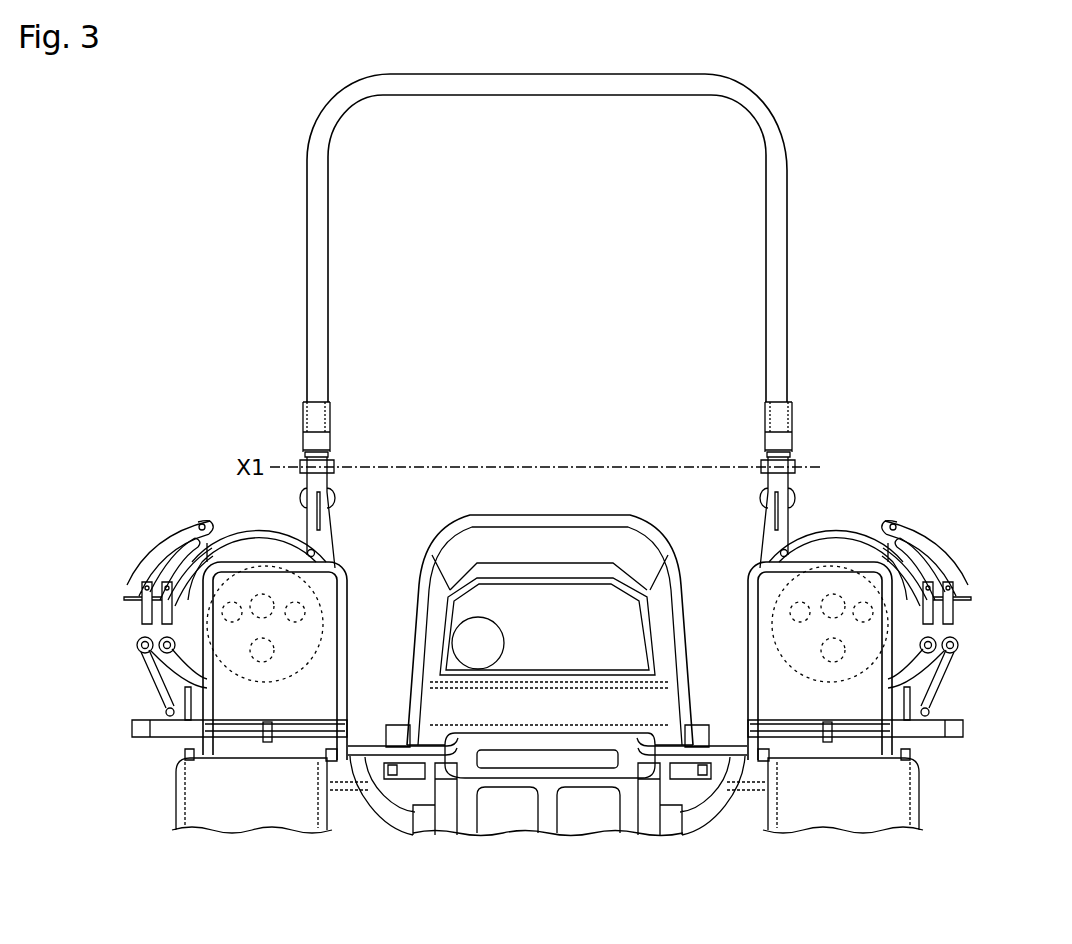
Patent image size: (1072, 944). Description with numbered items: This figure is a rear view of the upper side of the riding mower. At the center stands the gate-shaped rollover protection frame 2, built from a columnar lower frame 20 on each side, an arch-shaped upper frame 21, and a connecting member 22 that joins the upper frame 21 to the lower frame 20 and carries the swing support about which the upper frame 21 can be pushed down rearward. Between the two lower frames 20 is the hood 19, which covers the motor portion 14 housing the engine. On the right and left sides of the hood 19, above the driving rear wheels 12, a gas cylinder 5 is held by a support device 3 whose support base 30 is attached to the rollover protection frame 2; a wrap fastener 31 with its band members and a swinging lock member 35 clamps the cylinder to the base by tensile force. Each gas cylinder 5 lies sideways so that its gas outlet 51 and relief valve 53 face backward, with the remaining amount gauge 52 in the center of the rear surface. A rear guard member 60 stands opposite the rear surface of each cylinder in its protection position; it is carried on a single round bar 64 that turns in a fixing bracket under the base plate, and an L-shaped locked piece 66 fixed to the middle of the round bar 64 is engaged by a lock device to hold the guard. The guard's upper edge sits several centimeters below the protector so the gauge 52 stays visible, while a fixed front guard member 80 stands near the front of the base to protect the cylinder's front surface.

The rollover protection frame 2 is at (549, 321).
The upper frame 21 is at (765, 241).
The connecting member 22 is at (333, 443).
The lower frame 20 is at (333, 537).
The relief valve 53 is at (308, 549).
The motor portion 14 is at (531, 656).
The hood 19 is at (600, 537).
The rear guard member 60 is at (346, 610).
The gas outlet 51 is at (350, 585).
The gas cylinder 5 is at (547, 600).
The remaining amount gauge 52 is at (547, 624).
The front guard member 80 is at (125, 582).
The lock member 35 is at (170, 578).
The wrap fastener 31 is at (192, 523).
The support base 30 is at (150, 715).
The support device 3 is at (549, 754).
The round bar 64 is at (243, 740).
The locked piece 66 is at (272, 742).
The rear wheels 12 is at (178, 798).